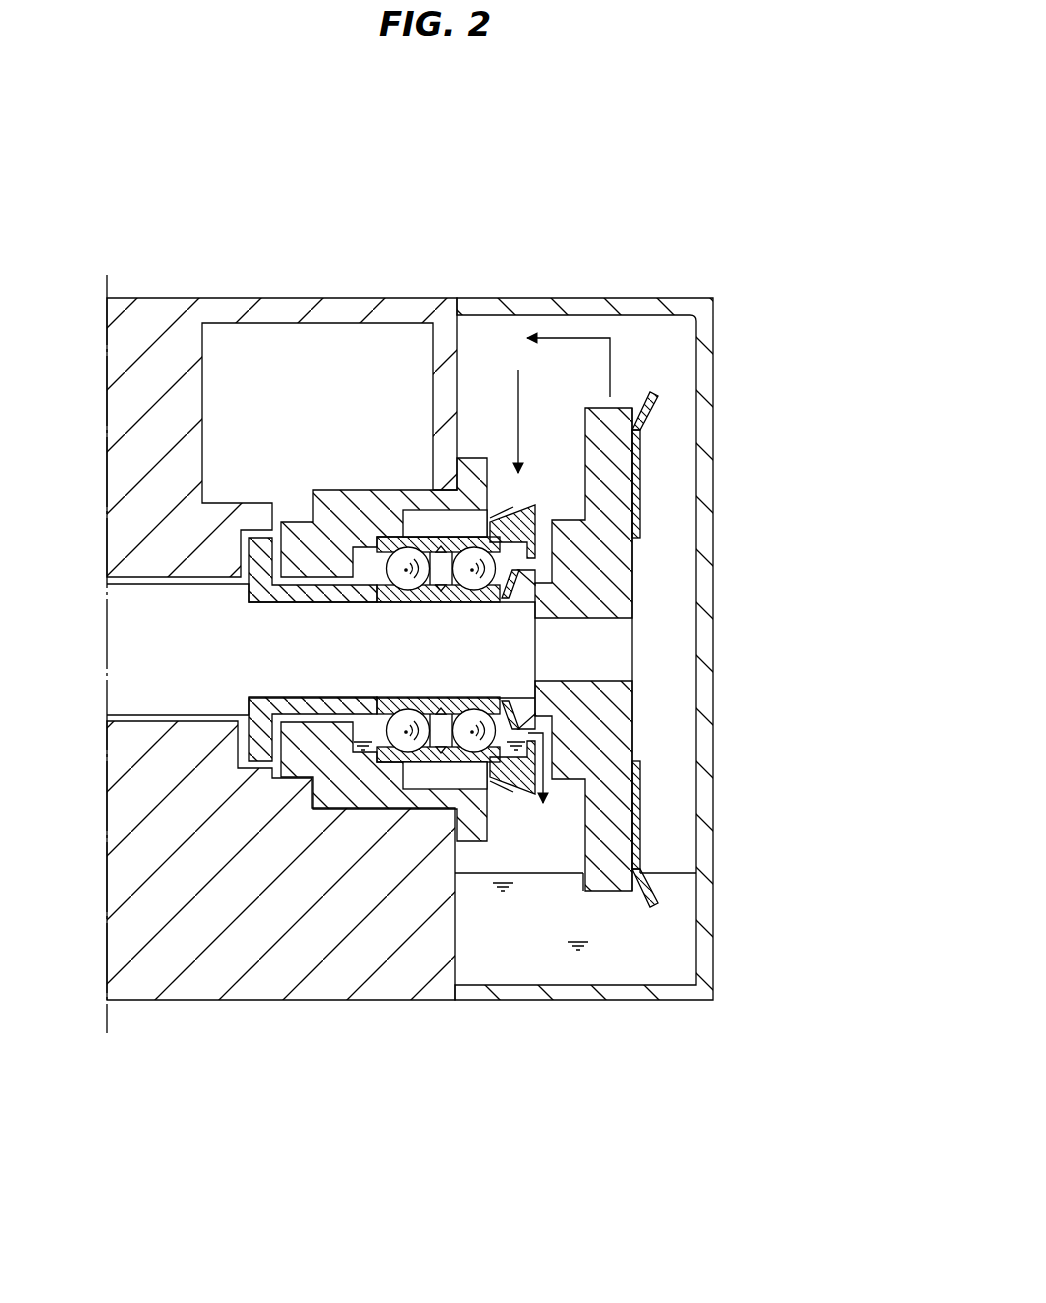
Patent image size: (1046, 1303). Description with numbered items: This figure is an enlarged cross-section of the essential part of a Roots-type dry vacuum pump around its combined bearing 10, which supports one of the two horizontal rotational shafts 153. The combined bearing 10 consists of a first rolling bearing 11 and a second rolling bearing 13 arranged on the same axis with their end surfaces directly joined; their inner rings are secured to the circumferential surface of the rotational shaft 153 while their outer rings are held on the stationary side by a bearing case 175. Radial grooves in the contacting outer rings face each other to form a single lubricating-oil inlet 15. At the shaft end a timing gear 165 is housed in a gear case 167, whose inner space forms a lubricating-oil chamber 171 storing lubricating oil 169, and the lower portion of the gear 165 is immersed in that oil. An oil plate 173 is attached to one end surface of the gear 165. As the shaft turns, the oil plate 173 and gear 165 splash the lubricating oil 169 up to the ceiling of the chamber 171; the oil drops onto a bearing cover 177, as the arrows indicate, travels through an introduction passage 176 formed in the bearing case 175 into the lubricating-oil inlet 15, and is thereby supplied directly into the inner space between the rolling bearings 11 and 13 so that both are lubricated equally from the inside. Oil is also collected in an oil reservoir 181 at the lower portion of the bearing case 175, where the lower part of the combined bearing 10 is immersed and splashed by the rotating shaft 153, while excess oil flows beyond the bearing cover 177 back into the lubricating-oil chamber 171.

The combined bearing 10 is at (412, 533).
The first rolling bearing 11 is at (400, 760).
The second rolling bearing 13 is at (457, 763).
The lubricating-oil inlet 15 is at (442, 561).
The rotational shaft 153 is at (155, 683).
The gear 165 is at (622, 455).
The gear case 167 is at (682, 298).
The lubricating oil 169 is at (536, 963).
The lubricating-oil chamber 171 is at (608, 958).
The oil plate 173 is at (657, 403).
The bearing case 175 is at (328, 490).
The introduction passage 176 is at (425, 516).
The bearing cover 177 is at (530, 503).
The oil reservoir 181 is at (362, 750).